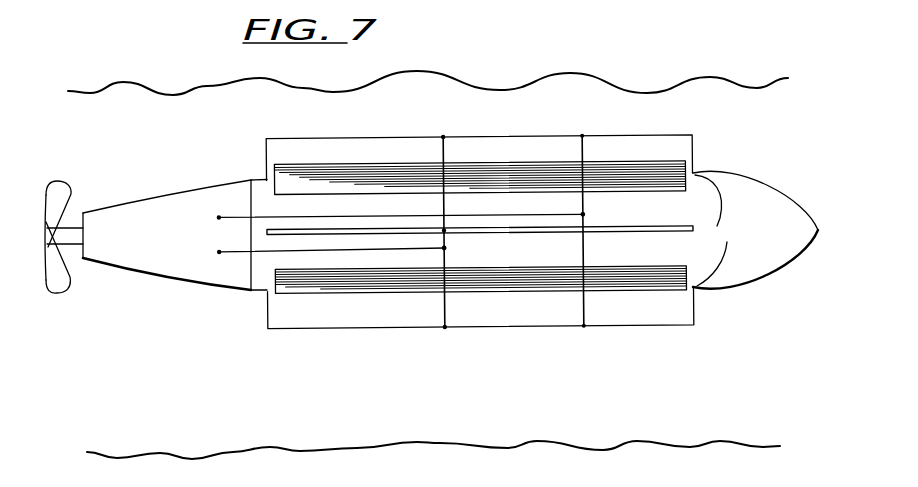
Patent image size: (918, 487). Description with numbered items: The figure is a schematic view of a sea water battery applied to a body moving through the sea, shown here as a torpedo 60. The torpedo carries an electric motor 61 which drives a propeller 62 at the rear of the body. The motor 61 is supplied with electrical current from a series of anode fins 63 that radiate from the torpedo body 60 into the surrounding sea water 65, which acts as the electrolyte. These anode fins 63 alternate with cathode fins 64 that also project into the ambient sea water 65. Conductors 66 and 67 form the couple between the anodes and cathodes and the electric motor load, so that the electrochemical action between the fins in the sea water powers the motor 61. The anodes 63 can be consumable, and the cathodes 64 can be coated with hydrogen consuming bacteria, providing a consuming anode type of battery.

The torpedo 60 is at (749, 170).
The electric motor 61 is at (207, 190).
The propeller 62 is at (75, 192).
The anode fins 63 is at (693, 229).
The cathode fins 64 is at (668, 180).
The sea water 65 is at (742, 339).
The conductor 66 is at (420, 252).
The conductor 67 is at (567, 214).